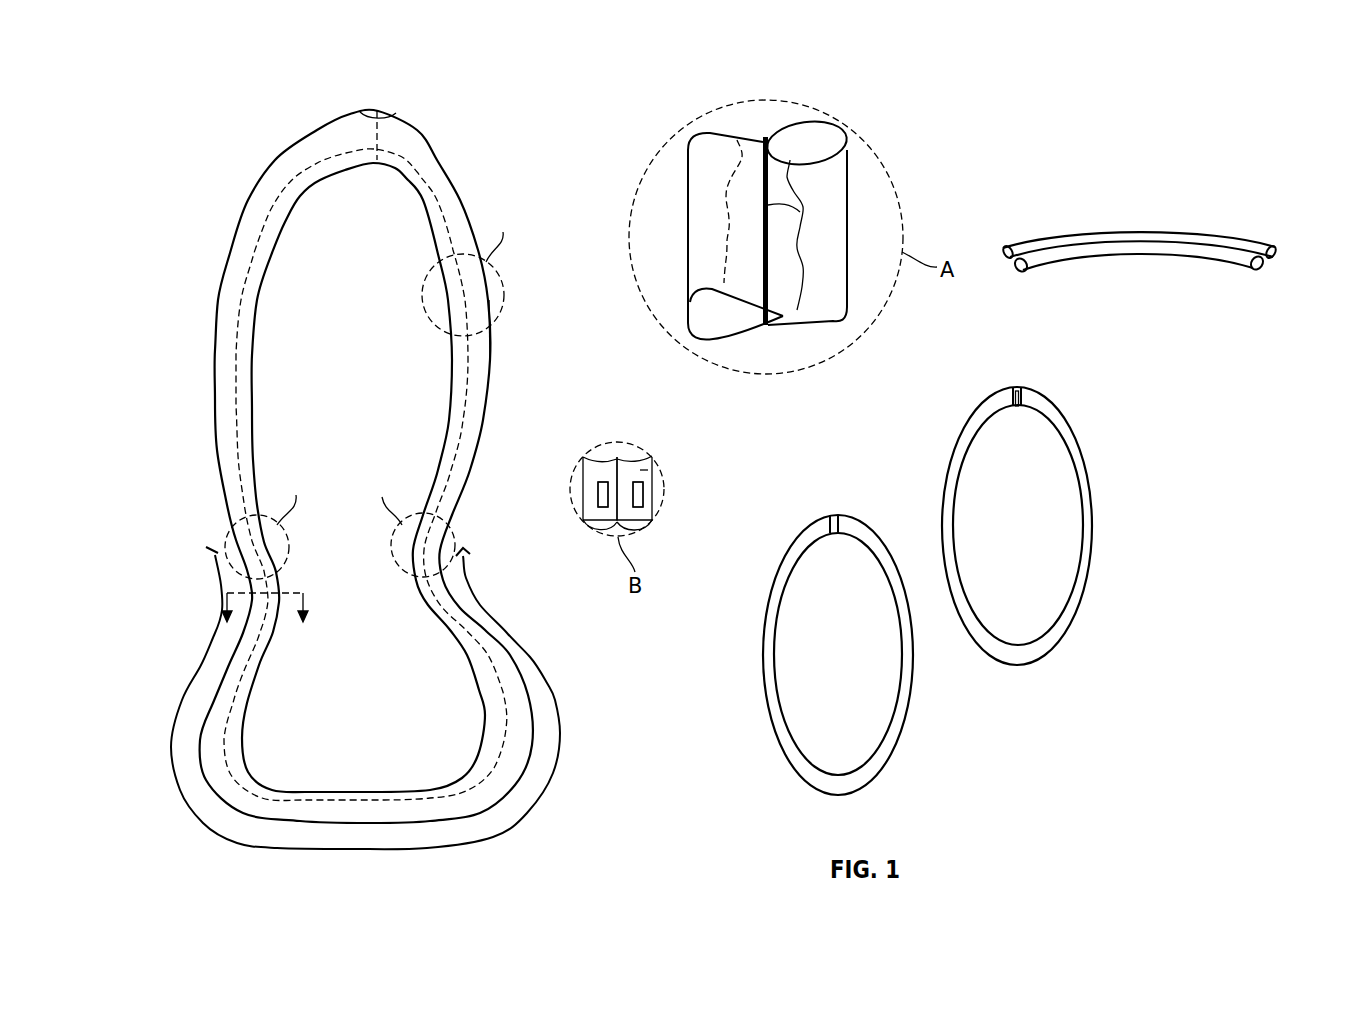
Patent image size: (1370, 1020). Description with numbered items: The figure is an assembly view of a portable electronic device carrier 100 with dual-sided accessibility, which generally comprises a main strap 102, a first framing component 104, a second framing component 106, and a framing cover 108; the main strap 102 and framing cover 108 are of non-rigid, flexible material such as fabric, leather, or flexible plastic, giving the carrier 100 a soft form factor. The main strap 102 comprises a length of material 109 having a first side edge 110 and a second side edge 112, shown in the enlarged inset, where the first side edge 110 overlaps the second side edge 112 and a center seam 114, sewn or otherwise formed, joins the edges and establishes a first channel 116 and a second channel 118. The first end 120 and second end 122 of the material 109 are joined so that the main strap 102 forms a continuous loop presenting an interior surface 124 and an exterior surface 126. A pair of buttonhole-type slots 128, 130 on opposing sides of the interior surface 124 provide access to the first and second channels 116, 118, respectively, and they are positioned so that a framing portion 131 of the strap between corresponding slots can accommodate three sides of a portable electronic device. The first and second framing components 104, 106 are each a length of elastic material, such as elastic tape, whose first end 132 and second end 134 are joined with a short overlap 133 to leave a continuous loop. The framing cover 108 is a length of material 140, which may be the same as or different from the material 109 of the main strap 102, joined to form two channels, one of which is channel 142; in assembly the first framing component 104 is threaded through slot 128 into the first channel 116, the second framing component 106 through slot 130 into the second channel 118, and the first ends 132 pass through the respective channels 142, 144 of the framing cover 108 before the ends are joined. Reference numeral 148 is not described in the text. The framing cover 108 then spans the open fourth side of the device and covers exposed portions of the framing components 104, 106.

The portable electronic device carrier 100 is at (1224, 122).
The main strap 102 is at (427, 160).
The length of material 109 is at (366, 466).
The first framing component 104 is at (872, 538).
The second framing component 106 is at (1077, 455).
The framing cover 108 is at (1212, 200).
The length of material 140 is at (1153, 291).
The first side edge 110 is at (800, 233).
The second side edge 112 is at (723, 197).
The center seam 114 is at (787, 197).
The first channel 116 is at (722, 325).
The second channel 118 is at (807, 137).
The first end 120 is at (380, 132).
The second end 122 is at (377, 123).
The interior surface 124 is at (642, 473).
The exterior surface 126 is at (472, 372).
The slot 128 is at (600, 497).
The slot 130 is at (638, 498).
The framing portion 131 is at (467, 876).
The first end 132 is at (840, 518).
The overlap 133 is at (1020, 408).
The second end 134 is at (825, 520).
The channel 142 is at (1260, 267).
The channel 144 is at (1275, 251).
The centerline 148 is at (242, 277).